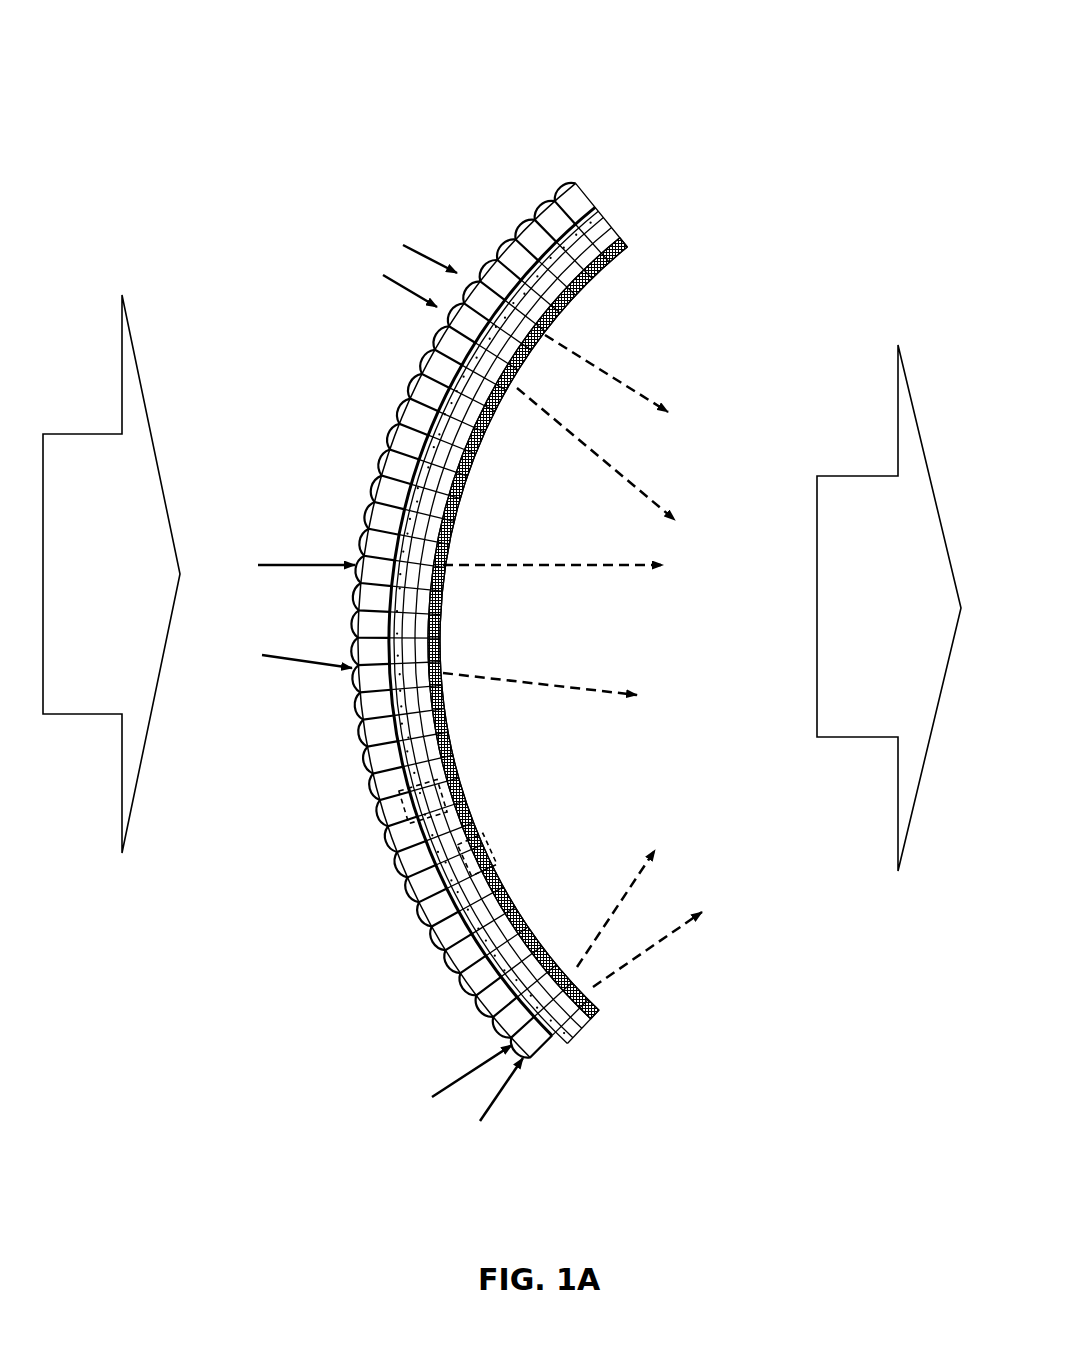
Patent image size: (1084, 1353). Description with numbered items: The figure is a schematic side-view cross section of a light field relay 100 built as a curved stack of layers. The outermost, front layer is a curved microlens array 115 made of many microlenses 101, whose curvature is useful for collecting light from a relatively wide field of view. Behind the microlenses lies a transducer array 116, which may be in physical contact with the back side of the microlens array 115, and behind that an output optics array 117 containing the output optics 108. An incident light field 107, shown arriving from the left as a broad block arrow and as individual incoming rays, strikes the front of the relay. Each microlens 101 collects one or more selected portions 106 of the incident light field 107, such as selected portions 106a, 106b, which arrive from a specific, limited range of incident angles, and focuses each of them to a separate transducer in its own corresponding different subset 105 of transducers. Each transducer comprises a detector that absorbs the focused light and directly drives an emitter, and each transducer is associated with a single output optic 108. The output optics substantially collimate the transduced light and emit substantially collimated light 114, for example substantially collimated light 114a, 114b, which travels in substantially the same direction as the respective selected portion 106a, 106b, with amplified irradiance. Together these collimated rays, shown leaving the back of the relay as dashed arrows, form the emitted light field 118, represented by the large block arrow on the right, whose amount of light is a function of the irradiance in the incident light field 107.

The light field relay 100 is at (280, 137).
The microlens 101 is at (548, 198).
The corresponding different subset of transducers 105 is at (396, 806).
The selected portion of incident light field 106 is at (420, 247).
The selected portion of incident light field 106a is at (511, 1098).
The selected portion of incident light field 106b is at (463, 1068).
The incident light field 107 is at (111, 574).
The output optic 108 is at (500, 843).
The substantially collimated light 114 is at (649, 386).
The substantially collimated light 114a is at (648, 873).
The substantially collimated light 114b is at (669, 947).
The microlens array 115 is at (583, 178).
The transducer array 116 is at (606, 212).
The output optics array 117 is at (628, 243).
The emitted light field 118 is at (889, 608).